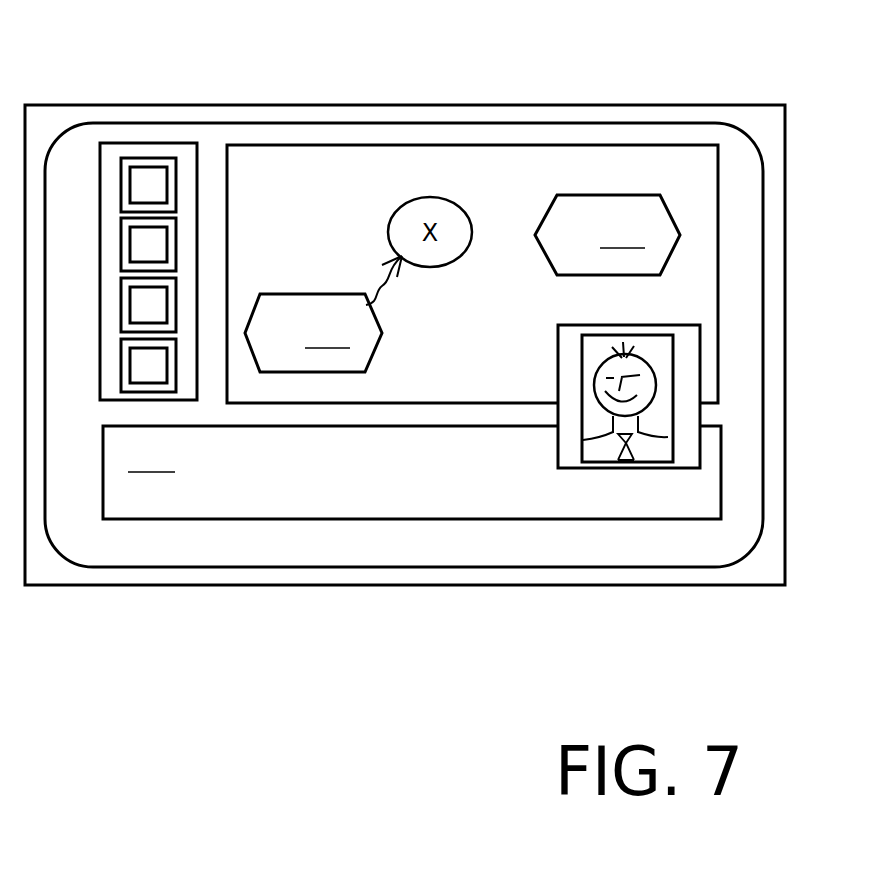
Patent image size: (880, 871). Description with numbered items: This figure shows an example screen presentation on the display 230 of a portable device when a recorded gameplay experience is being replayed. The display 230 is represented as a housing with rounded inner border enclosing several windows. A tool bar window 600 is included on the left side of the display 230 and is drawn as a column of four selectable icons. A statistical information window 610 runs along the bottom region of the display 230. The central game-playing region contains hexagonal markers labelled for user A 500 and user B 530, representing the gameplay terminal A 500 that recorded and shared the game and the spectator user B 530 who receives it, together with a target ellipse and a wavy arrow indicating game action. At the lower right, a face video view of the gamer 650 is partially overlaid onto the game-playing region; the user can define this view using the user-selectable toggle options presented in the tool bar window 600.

The display 230 is at (452, 135).
The tool bar window 600 is at (113, 177).
The statistical information window 610 is at (412, 472).
The gameplay terminal A 500 is at (313, 333).
The spectator user B 530 is at (607, 235).
The face video view of the gamer 650 is at (573, 452).